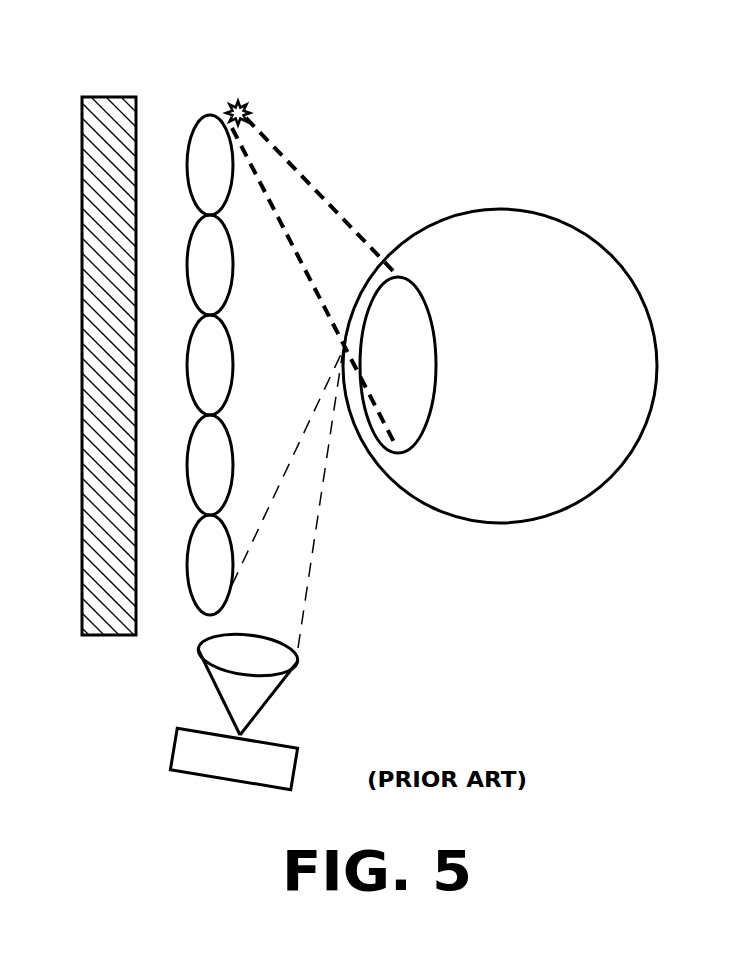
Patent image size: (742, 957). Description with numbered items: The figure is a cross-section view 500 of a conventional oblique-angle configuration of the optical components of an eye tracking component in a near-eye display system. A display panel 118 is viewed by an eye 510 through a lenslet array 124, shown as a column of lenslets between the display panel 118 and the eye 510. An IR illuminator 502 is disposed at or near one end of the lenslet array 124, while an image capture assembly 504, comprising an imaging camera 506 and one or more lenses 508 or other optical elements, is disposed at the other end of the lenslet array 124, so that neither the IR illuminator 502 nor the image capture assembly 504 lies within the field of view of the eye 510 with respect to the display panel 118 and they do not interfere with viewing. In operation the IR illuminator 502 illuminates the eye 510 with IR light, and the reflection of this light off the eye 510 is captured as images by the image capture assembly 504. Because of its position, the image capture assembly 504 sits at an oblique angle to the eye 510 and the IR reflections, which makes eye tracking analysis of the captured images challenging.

The display panel 118 is at (108, 97).
The lenslet array 124 is at (185, 128).
The IR illuminator 502 is at (252, 113).
The cross-section view 500 is at (455, 126).
The eye 510 is at (517, 208).
The image capture assembly 504 is at (322, 675).
The lenses 508 is at (198, 649).
The imaging camera 506 is at (173, 752).